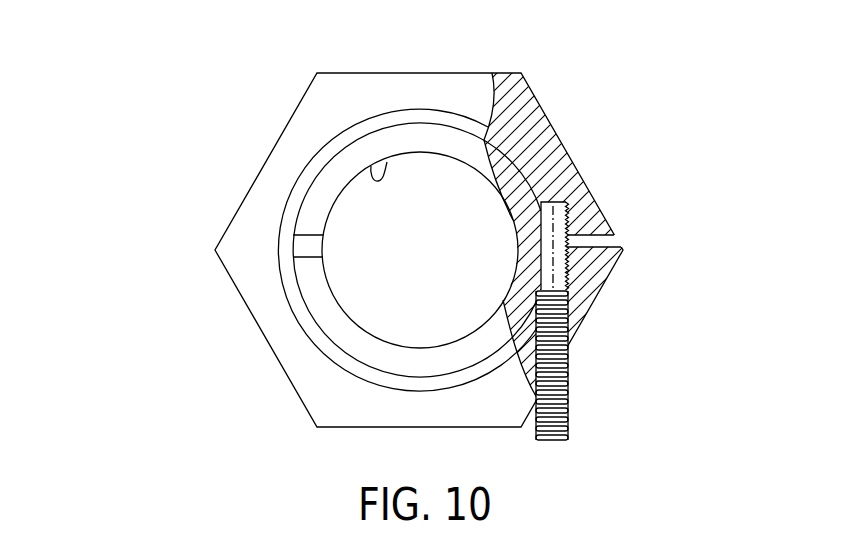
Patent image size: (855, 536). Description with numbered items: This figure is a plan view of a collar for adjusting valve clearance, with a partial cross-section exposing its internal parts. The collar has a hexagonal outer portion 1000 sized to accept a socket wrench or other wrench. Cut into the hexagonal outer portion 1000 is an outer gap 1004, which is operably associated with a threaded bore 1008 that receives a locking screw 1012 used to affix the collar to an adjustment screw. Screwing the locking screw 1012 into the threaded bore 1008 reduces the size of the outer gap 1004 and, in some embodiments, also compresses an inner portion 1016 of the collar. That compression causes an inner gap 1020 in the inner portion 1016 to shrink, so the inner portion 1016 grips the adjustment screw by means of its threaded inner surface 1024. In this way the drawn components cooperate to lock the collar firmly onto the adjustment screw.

The hexagonal outer portion 1000 is at (308, 380).
The outer gap 1004 is at (645, 237).
The threaded bore 1008 is at (564, 274).
The locking screw 1012 is at (568, 428).
The inner portion 1016 is at (312, 297).
The inner gap 1020 is at (280, 246).
The threaded inner surface 1024 is at (387, 162).